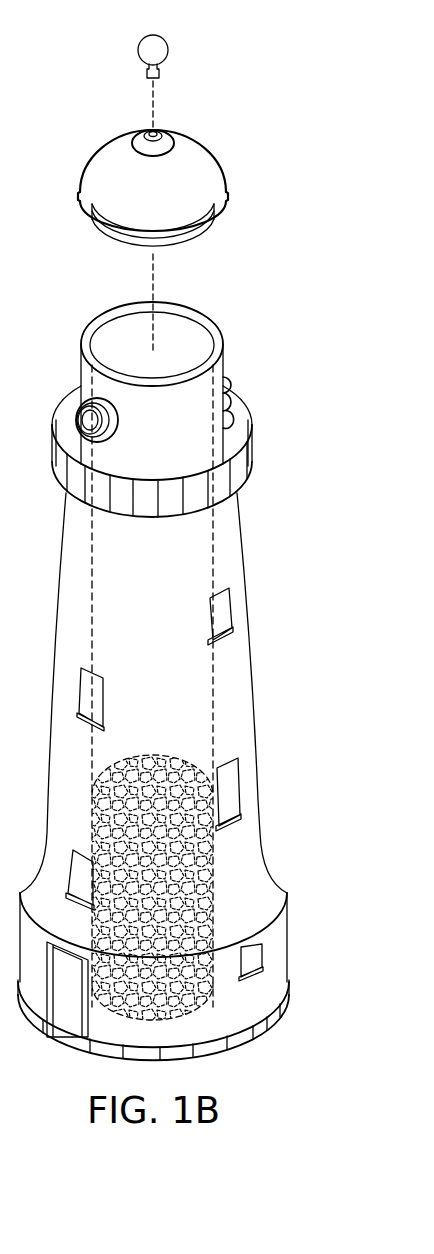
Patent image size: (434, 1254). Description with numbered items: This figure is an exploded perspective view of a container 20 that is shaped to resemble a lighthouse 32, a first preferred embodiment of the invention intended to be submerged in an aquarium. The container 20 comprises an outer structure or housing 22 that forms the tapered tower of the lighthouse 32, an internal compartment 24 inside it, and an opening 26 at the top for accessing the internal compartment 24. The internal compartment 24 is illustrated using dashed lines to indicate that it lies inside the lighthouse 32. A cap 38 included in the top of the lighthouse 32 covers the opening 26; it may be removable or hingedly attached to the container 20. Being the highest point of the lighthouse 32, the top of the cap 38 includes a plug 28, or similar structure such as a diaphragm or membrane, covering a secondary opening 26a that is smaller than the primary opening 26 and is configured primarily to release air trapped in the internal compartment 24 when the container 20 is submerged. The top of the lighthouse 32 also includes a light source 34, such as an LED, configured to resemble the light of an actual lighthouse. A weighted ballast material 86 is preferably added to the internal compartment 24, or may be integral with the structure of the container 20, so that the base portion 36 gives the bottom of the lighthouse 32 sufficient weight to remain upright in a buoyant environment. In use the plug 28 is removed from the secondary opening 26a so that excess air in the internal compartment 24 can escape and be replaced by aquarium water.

The container 20 is at (266, 219).
The outer structure or housing 22 is at (247, 567).
The internal compartment 24 is at (141, 623).
The opening 26 is at (110, 330).
The secondary opening 26a is at (158, 128).
The plug 28 is at (157, 47).
The lighthouse 32 is at (285, 324).
The light source 34 is at (78, 412).
The base portion 36 is at (251, 993).
The cap 38 is at (106, 148).
The weighted ballast material 86 is at (141, 929).